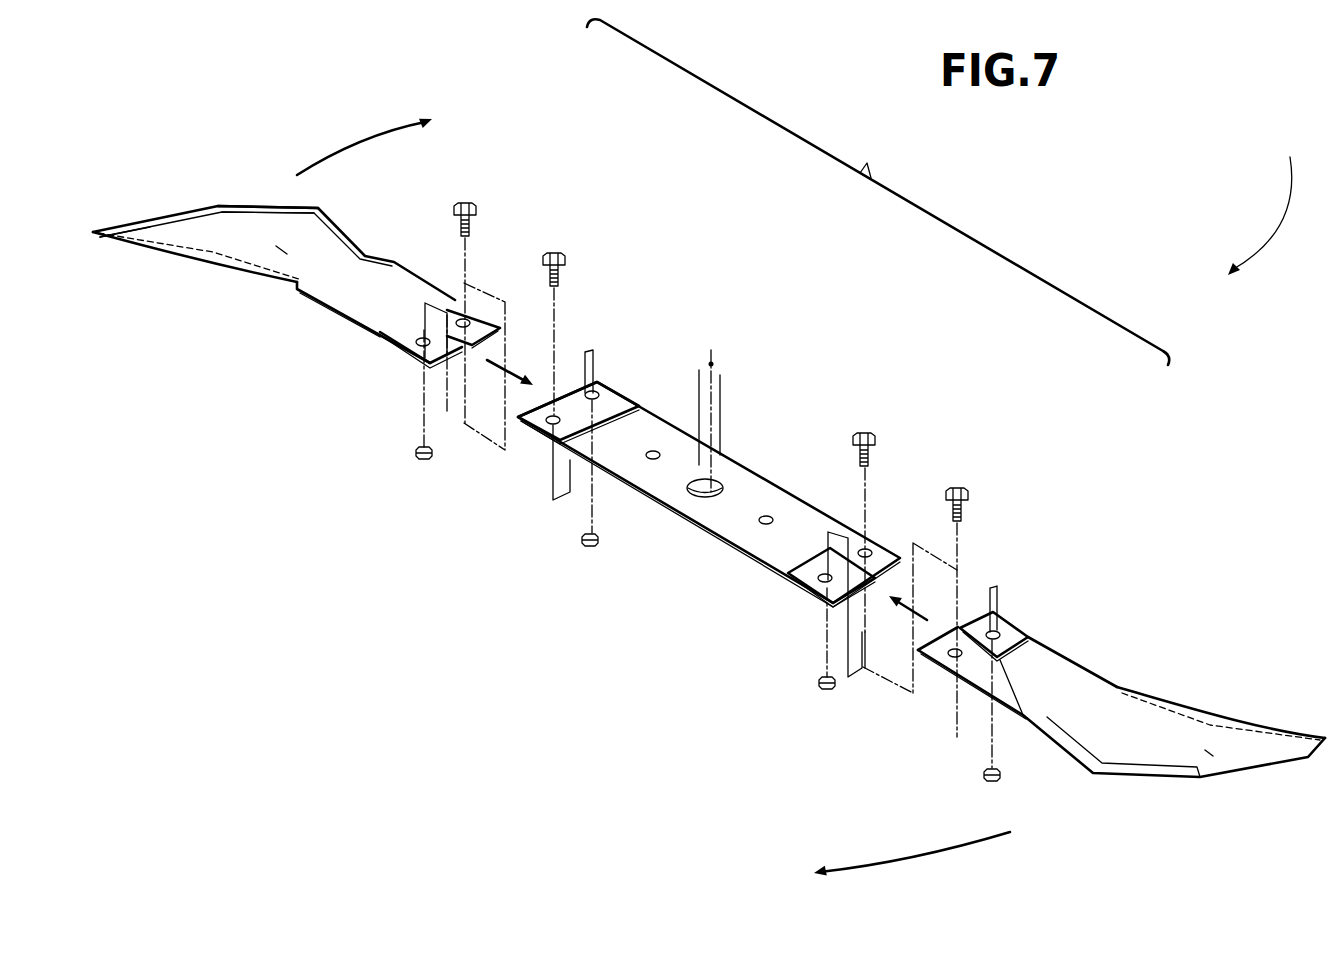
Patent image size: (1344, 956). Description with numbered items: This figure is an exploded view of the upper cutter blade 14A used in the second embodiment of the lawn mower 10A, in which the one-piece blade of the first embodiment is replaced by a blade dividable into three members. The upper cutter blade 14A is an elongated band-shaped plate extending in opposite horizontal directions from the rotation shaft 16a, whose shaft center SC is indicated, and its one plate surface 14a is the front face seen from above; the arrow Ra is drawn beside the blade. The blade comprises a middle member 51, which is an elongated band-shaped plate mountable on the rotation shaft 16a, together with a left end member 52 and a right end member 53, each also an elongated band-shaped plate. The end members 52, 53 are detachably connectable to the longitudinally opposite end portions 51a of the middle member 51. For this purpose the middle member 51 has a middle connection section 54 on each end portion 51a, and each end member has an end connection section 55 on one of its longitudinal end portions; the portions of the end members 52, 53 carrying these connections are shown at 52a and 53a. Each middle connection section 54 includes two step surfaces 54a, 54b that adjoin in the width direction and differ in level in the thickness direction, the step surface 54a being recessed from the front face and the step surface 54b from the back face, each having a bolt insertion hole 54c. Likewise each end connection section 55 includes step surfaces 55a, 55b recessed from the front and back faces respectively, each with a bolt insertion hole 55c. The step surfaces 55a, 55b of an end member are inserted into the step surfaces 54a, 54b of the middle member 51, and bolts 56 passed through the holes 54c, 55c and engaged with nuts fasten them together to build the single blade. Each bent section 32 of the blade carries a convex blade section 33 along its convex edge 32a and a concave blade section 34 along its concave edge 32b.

The lawn mower 10A is at (1272, 200).
The upper cutter blade 14A is at (878, 192).
The one plate surface 14a is at (280, 250).
The rotation shaft 16a is at (722, 402).
The shaft center SC is at (712, 362).
The bent section 32 is at (230, 228).
The convex edge 32a is at (147, 215).
The concave edge 32b is at (157, 240).
The convex blade section 33 is at (263, 210).
The concave blade section 34 is at (213, 252).
The middle member 51 is at (720, 420).
The end portion 51a is at (623, 403).
The left end member 52 is at (439, 204).
The attachment portion of left blade 52a is at (348, 302).
The right end member 53 is at (1041, 538).
The attachment portion of right blade 53a is at (1030, 655).
The middle connection section 54 is at (707, 509).
The step surface 54a is at (536, 430).
The step surface 54b is at (586, 512).
The bolt insertion hole 54c is at (582, 352).
The end connection section 55 is at (664, 535).
The step surface 55a is at (410, 350).
The step surface 55b is at (500, 315).
The bolt insertion hole 55c is at (468, 313).
The bolt 56 is at (468, 200).
The rotation direction Ra is at (653, 499).